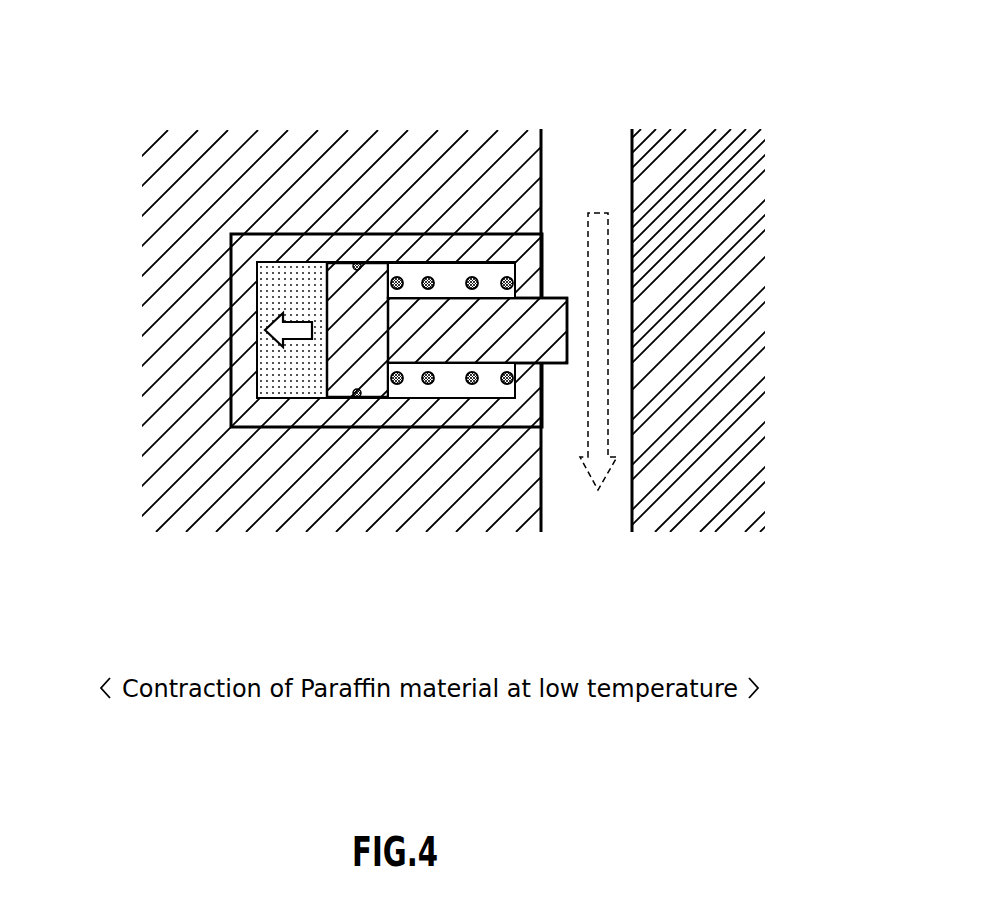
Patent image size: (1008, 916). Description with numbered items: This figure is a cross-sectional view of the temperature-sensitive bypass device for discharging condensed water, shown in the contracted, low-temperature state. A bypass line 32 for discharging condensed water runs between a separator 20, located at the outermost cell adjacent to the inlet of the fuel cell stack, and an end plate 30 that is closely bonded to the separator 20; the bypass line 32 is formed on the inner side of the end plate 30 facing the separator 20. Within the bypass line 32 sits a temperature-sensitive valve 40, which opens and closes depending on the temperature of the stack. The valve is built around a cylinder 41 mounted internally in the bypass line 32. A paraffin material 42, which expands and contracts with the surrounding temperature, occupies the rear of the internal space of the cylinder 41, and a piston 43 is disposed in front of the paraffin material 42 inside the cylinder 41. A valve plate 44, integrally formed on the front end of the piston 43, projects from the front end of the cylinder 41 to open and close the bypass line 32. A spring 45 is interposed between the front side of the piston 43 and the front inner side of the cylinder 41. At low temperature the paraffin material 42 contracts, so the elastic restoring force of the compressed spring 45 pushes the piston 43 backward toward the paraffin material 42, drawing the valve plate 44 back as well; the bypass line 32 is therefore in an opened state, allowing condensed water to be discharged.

The separator 20 is at (692, 160).
The end plate 30 is at (541, 187).
The bypass line 32 is at (632, 177).
The temperature-sensitive valve 40 is at (275, 428).
The cylinder 41 is at (232, 343).
The paraffin material 42 is at (283, 290).
The piston 43 is at (373, 372).
The valve plate 44 is at (548, 345).
The spring 45 is at (428, 378).